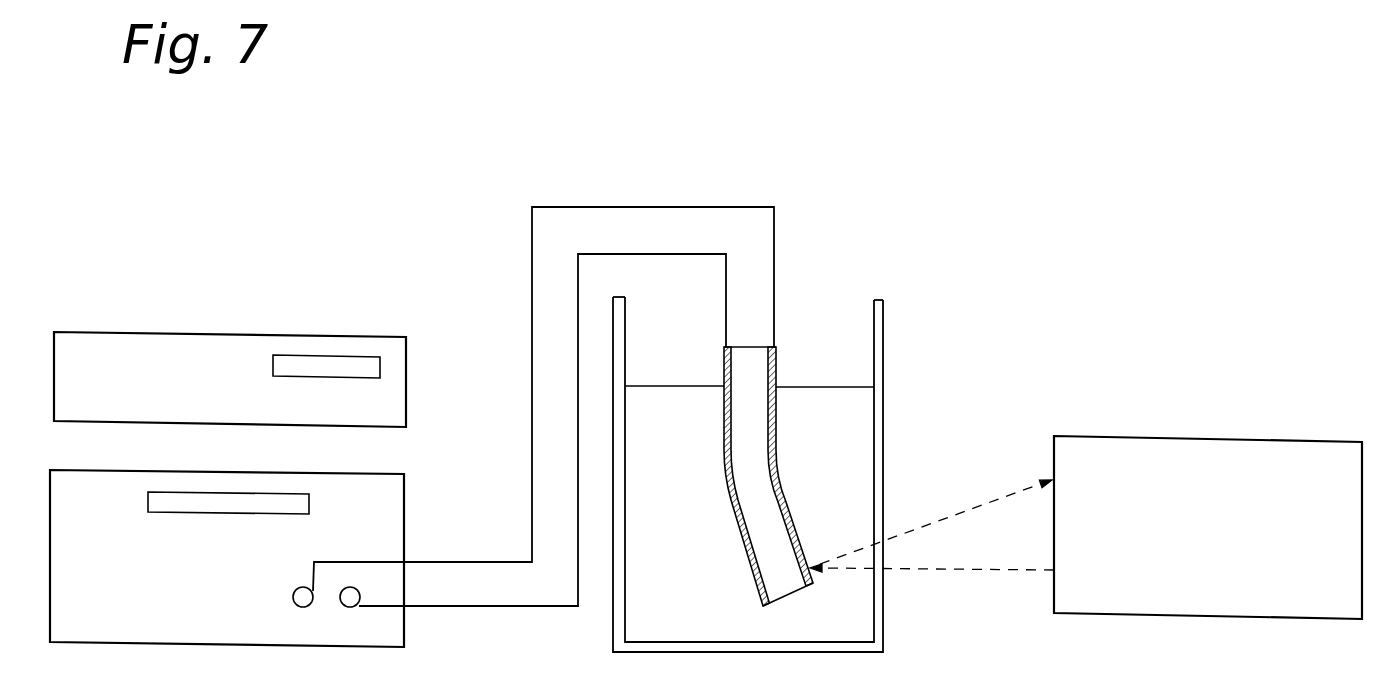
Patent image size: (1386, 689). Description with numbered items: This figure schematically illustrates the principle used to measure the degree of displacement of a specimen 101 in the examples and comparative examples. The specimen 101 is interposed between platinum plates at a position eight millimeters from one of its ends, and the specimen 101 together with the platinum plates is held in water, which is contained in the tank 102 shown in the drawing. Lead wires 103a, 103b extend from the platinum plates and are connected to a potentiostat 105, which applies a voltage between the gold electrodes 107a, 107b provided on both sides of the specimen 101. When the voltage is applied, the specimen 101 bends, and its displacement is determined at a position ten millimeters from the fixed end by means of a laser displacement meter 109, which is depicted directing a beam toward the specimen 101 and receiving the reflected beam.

The specimen 101 is at (825, 476).
The liquid tank 102 is at (657, 418).
The lead wire 103a is at (712, 207).
The lead wire 103b is at (623, 254).
The potentiostat 105 is at (425, 483).
The gold electrode 107a is at (777, 420).
The gold electrode 107b is at (721, 467).
The optical detector 109 is at (1266, 439).